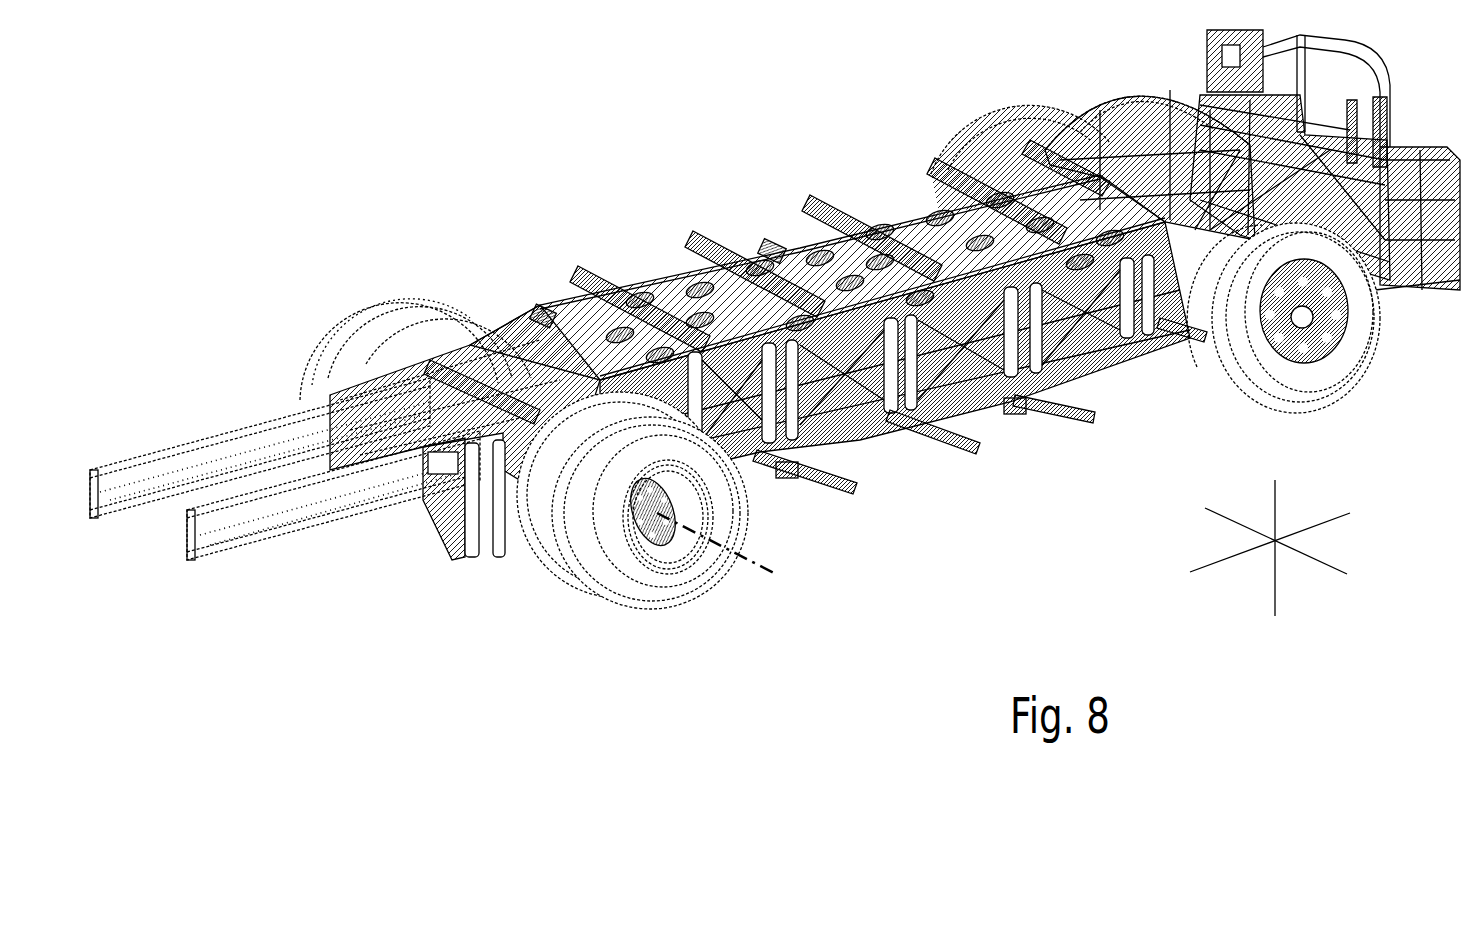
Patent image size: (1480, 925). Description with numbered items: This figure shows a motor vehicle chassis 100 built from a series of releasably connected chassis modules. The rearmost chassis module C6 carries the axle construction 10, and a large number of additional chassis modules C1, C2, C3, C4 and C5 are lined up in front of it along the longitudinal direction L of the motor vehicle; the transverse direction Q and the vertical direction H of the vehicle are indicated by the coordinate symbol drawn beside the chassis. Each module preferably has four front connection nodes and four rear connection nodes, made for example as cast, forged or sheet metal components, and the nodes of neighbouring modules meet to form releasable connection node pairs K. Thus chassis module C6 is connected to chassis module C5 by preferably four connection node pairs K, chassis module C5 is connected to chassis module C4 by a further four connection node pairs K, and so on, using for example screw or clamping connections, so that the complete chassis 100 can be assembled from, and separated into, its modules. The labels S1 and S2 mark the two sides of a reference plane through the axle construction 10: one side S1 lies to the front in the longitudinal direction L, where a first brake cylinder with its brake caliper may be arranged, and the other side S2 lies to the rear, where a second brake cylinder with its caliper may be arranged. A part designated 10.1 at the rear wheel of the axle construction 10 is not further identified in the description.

The motor vehicle chassis 100 is at (775, 341).
The axle construction 10 is at (775, 295).
The rear axle / wheel 10.1 is at (753, 568).
The chassis module C1 is at (1028, 160).
The chassis module C2 is at (928, 189).
The chassis module C3 is at (802, 229).
The chassis module C4 is at (686, 259).
The chassis module C5 is at (576, 293).
The chassis module C6 is at (396, 360).
The connection node pairs K is at (538, 310).
The one side of the reference plane S1 is at (1044, 533).
The other side of the reference plane S2 is at (436, 611).
The vertical direction H is at (1272, 551).
The longitudinal direction L is at (1269, 543).
The transverse direction Q is at (1272, 541).